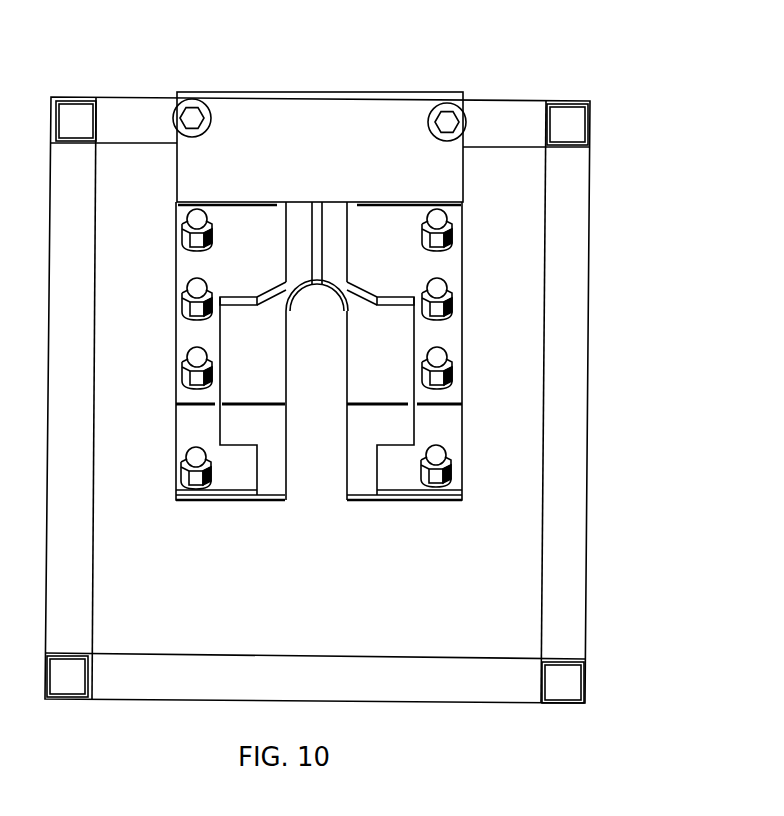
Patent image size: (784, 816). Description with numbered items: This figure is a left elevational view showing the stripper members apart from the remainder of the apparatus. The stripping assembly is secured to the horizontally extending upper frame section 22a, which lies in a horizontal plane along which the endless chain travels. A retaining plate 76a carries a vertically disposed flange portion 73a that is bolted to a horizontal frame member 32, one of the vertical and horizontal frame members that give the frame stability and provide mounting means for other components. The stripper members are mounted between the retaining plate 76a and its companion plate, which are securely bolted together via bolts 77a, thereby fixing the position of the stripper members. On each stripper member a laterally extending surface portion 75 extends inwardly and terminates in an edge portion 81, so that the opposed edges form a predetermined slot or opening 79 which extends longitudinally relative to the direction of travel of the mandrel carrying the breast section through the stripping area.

The upper frame section 22a is at (598, 225).
The horizontal frame member 32 is at (507, 115).
The vertically disposed flange portion 73a is at (287, 105).
The retaining plate 76a is at (430, 261).
The bolts 77a is at (447, 296).
The laterally extending surface portion 75 is at (235, 340).
The slot 79 is at (315, 232).
The edge portion 81 is at (287, 382).